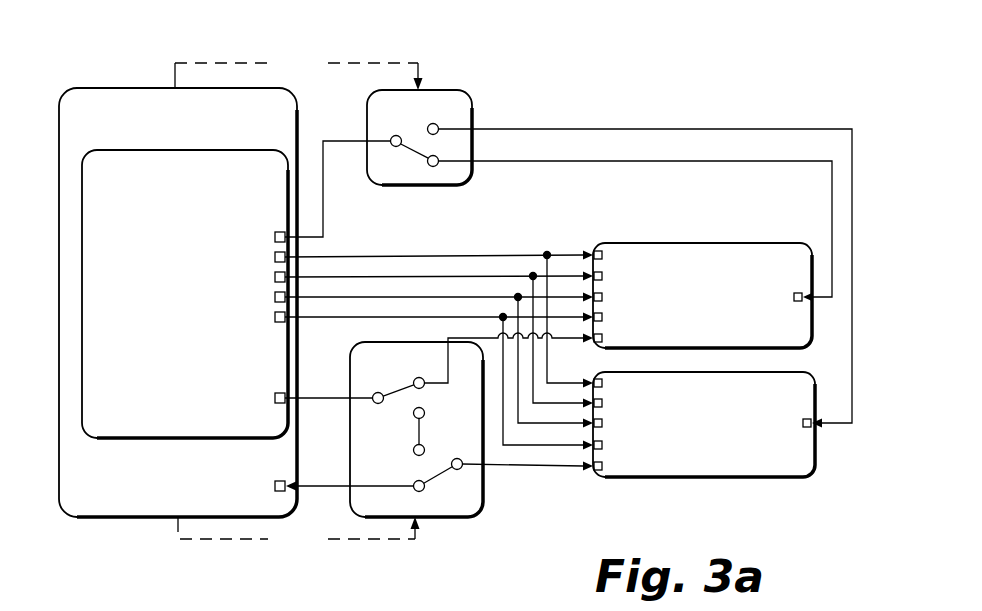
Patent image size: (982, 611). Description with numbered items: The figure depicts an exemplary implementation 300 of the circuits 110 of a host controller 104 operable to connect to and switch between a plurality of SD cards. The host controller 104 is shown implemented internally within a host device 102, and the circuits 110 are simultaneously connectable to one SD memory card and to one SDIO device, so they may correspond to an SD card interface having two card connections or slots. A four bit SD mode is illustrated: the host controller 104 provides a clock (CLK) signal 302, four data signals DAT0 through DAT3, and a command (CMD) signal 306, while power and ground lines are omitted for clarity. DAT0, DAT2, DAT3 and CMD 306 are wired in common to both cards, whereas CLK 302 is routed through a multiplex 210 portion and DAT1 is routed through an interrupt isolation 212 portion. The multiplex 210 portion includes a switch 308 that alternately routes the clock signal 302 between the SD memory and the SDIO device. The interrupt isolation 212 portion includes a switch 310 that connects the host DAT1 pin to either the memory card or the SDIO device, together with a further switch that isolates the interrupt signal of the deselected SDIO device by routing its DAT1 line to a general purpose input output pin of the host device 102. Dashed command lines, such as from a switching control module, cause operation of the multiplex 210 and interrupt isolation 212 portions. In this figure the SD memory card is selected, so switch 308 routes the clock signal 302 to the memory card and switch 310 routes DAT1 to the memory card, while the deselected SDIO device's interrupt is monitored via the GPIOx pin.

The exemplary implementation 300 is at (128, 46).
The host device 102 is at (221, 117).
The host controller 104 is at (170, 203).
The clock (CLK) signal 302 is at (206, 246).
The command (CMD) signal 306 is at (199, 326).
The multiplex portion 210 is at (470, 89).
The switch 308 is at (407, 173).
The circuits 110 is at (618, 111).
The interrupt isolation portion 212 is at (487, 478).
The switch 310 is at (401, 375).